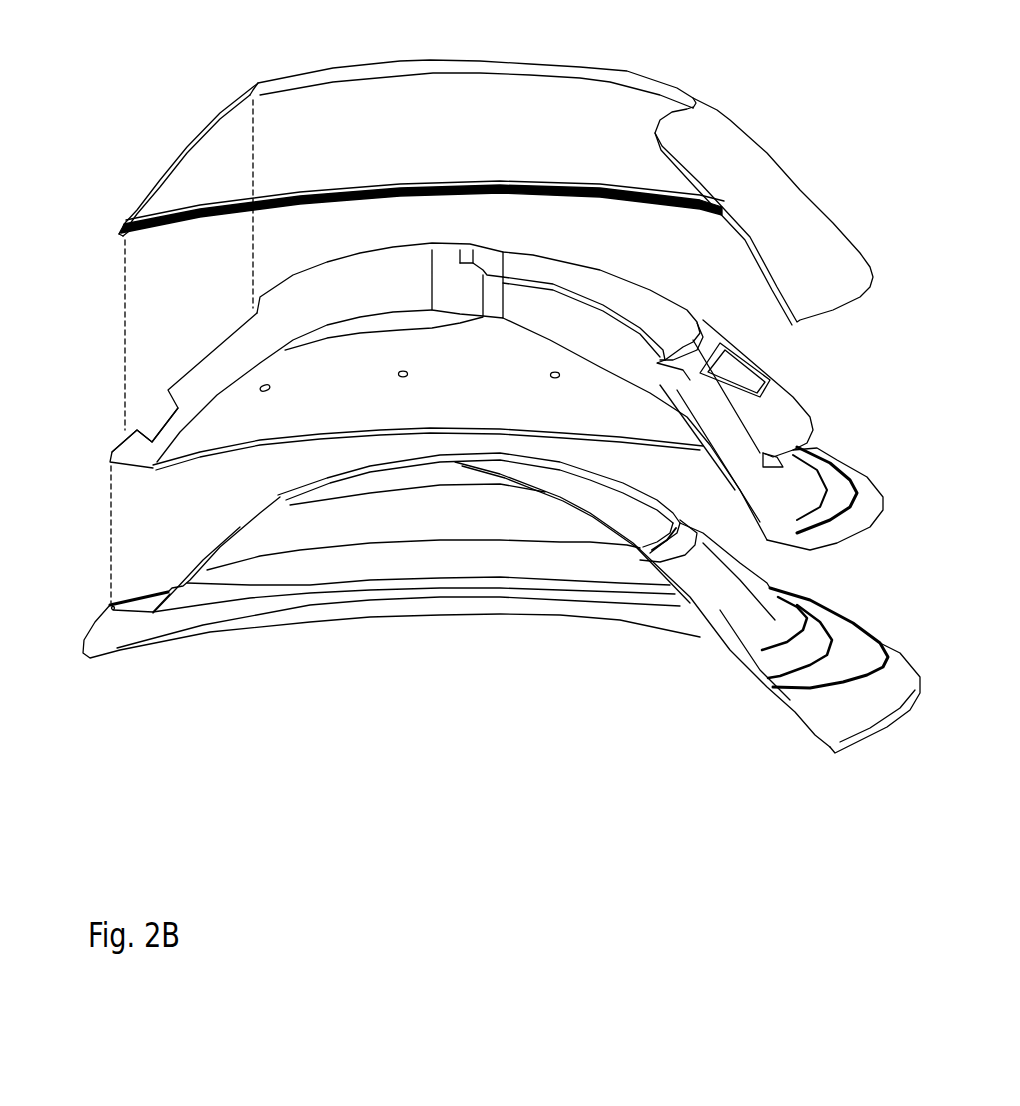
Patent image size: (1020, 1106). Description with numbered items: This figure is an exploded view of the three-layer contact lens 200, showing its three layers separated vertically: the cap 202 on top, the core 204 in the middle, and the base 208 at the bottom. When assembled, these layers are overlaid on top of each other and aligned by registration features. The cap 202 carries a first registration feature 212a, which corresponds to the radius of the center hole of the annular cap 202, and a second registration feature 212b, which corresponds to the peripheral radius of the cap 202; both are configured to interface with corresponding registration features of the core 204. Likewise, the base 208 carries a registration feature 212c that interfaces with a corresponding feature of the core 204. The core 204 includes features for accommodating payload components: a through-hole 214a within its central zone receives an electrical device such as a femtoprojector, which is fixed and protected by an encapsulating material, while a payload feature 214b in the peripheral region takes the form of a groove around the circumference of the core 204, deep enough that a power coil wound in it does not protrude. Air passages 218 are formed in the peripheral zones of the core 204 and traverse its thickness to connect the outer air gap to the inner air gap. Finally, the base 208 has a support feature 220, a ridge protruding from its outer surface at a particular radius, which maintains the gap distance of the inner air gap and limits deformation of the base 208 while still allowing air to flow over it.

The three-layer contact lens 200 is at (734, 845).
The cap 202 is at (496, 192).
The core 204 is at (512, 396).
The base 208 is at (501, 641).
The first registration feature 212a is at (178, 164).
The second registration feature 212b is at (89, 277).
The registration feature 212c is at (157, 675).
The through-hole 214a is at (590, 271).
The payload feature 214b is at (91, 401).
The air passages 218 is at (210, 458).
The support feature 220 is at (587, 635).